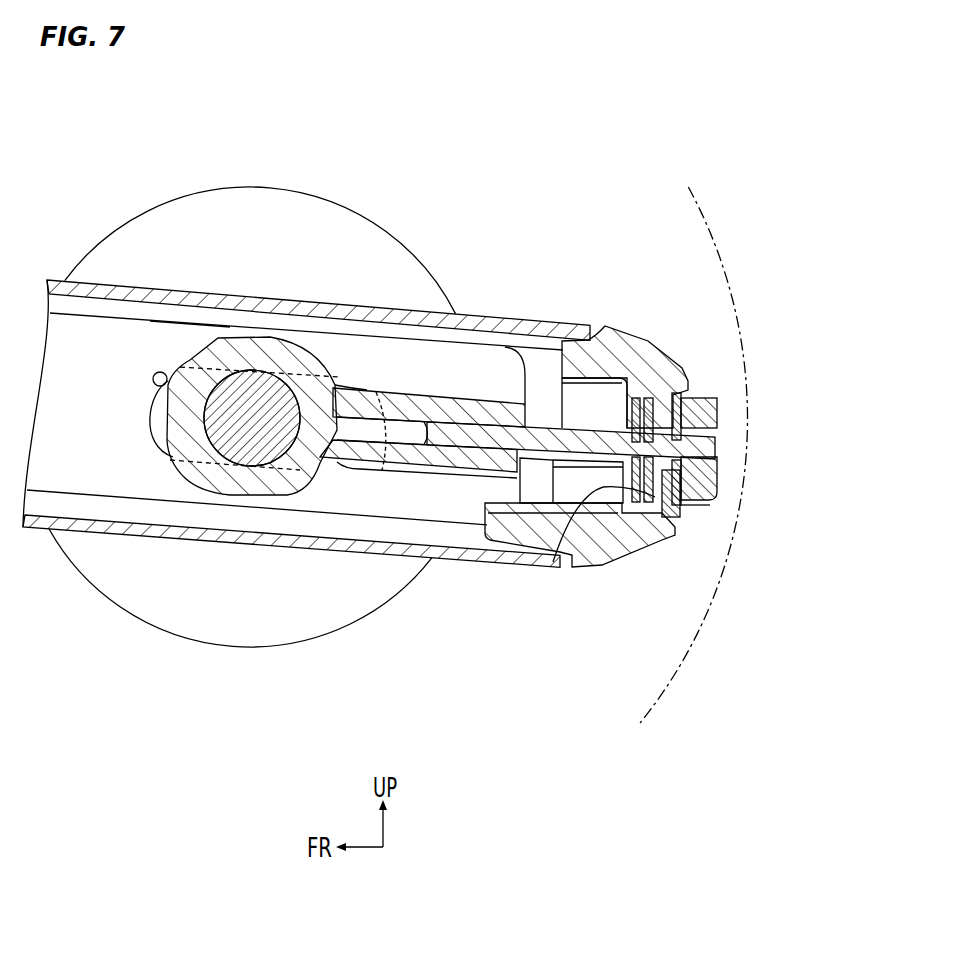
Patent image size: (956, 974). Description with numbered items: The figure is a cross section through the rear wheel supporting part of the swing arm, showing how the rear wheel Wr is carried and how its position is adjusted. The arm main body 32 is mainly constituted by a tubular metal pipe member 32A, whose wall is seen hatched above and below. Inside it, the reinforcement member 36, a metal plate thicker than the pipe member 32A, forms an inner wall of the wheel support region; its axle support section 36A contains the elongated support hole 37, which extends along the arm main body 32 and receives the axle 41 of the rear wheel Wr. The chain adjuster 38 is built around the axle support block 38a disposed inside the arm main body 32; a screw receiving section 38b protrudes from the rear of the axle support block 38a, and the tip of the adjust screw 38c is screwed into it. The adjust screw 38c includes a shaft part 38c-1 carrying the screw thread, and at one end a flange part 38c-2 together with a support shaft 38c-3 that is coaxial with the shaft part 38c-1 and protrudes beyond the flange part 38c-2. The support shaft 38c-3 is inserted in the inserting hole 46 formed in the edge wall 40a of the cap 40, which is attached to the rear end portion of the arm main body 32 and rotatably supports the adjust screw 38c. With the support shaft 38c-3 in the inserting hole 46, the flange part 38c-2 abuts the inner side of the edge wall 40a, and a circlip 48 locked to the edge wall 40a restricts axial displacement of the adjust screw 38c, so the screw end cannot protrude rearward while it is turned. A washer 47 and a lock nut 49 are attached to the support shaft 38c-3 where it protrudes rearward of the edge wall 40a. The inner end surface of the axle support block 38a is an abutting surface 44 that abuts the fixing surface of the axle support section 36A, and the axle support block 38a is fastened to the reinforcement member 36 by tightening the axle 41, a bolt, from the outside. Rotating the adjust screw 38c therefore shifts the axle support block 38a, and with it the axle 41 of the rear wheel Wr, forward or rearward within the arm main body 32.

The arm main body 32 is at (97, 540).
The pipe member 32A is at (163, 530).
The reinforcement member 36 is at (256, 318).
The axle support section 36A is at (195, 330).
The support hole 37 is at (163, 373).
The chain adjuster 38 is at (517, 437).
The axle support block 38a is at (338, 350).
The screw receiving section 38b is at (392, 457).
The adjust screw 38c is at (614, 494).
The shaft part 38c-1 is at (535, 455).
The flange part 38c-2 is at (565, 455).
The support shaft 38c-3 is at (683, 480).
The cap 40 is at (602, 557).
The edge wall 40a is at (650, 493).
The axle 41 is at (251, 437).
The abutting surface 44 is at (231, 352).
The inserting hole 46 is at (647, 472).
The washer 47 is at (688, 396).
The circlip 48 is at (645, 398).
The lock nut 49 is at (708, 488).
The rear wheel Wr is at (653, 690).